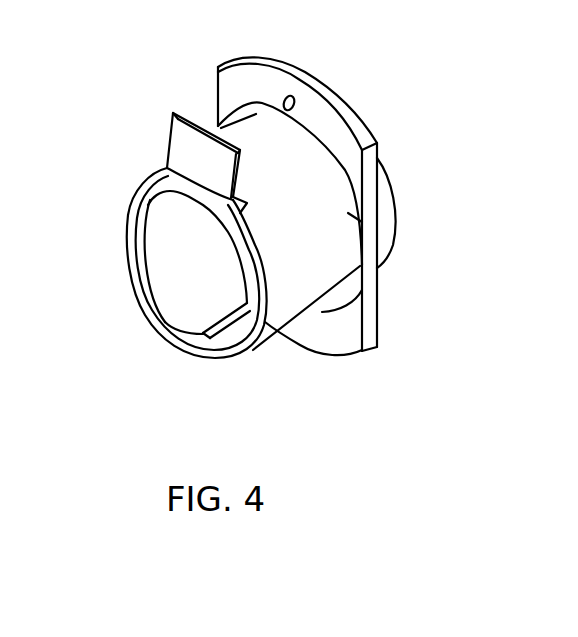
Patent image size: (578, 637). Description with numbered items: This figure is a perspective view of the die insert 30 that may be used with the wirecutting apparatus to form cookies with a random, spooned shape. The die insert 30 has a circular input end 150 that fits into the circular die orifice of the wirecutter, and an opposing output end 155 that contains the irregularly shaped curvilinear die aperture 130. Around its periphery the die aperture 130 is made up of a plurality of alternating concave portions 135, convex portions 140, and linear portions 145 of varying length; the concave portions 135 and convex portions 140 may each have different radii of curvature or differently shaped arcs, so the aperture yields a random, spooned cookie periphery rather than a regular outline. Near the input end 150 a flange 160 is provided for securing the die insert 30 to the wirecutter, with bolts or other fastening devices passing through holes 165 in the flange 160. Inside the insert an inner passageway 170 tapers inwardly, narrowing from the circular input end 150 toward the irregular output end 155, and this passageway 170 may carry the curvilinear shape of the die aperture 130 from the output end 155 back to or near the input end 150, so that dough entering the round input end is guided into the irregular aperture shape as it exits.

The die insert 30 is at (182, 104).
The curvilinear die aperture 130 is at (160, 284).
The concave portions 135 is at (178, 348).
The convex portions 140 is at (142, 178).
The linear portions 145 is at (145, 228).
The circular input end 150 is at (390, 178).
The output end 155 is at (217, 347).
The flange 160 is at (362, 322).
The holes 165 is at (293, 100).
The inner passageway 170 is at (172, 258).